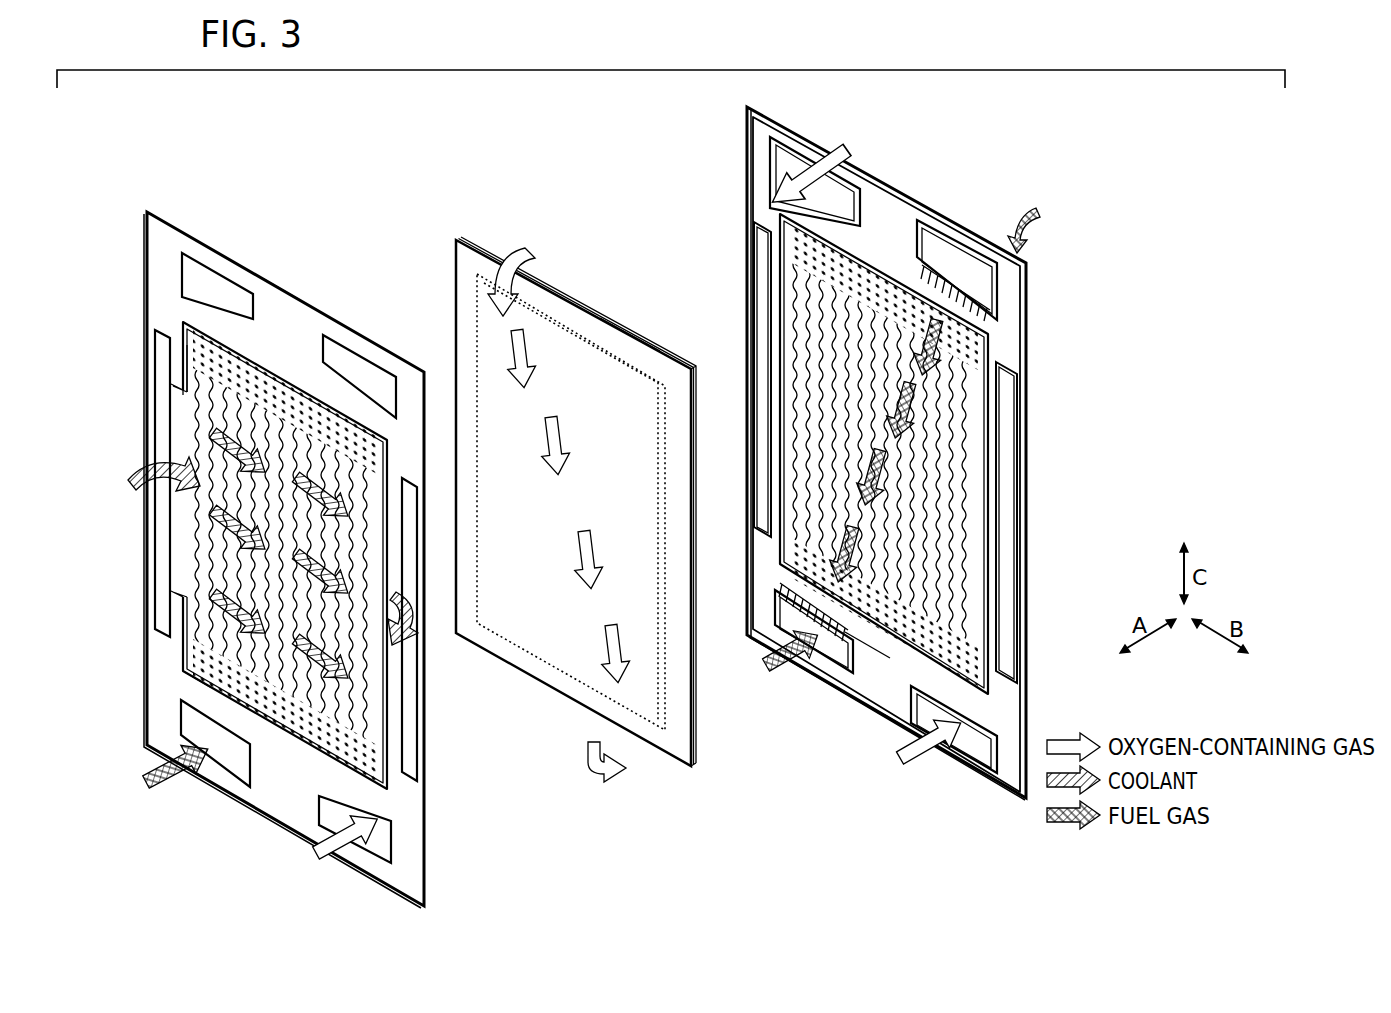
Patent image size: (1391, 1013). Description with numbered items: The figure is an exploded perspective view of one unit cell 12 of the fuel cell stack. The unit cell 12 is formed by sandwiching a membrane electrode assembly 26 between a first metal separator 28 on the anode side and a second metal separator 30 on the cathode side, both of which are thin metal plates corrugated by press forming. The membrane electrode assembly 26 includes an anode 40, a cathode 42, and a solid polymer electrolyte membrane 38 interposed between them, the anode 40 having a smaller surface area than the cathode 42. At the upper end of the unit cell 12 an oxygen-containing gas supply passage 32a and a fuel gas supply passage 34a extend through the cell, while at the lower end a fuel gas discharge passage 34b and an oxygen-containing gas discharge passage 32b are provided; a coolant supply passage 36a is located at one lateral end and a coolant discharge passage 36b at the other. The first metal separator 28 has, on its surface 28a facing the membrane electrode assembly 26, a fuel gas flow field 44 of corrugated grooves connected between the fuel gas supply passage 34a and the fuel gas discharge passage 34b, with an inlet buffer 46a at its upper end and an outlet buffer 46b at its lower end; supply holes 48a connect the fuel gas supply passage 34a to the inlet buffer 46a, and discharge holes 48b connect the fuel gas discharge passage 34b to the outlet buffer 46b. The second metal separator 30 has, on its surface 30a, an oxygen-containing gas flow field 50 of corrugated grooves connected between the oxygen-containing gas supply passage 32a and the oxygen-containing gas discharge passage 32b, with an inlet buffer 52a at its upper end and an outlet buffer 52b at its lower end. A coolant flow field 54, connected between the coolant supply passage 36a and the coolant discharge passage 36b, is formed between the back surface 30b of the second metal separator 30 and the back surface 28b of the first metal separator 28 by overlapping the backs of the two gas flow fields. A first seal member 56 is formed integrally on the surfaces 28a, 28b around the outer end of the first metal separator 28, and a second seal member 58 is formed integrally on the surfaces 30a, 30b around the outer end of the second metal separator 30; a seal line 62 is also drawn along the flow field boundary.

The unit cell 12 is at (338, 218).
The membrane electrode assembly 26 is at (456, 238).
The first metal separator 28 is at (746, 126).
The surface of first metal separator 28a is at (868, 698).
The surface of first metal separator 28b is at (896, 720).
The second metal separator 30 is at (146, 210).
The surface of second metal separator 30a is at (288, 800).
The surface of second metal separator 30b is at (252, 788).
The oxygen-containing gas supply passage 32a is at (207, 290).
The oxygen-containing gas discharge passage 32b is at (384, 827).
The fuel gas supply passage 34a is at (343, 362).
The fuel gas discharge passage 34b is at (190, 729).
The coolant supply passage 36a is at (158, 565).
The coolant discharge passage 36b is at (409, 727).
The solid polymer electrolyte membrane 38 is at (621, 337).
The anode 40 is at (636, 375).
The cathode 42 is at (586, 325).
The fuel gas flow field 44 is at (810, 307).
The inlet buffer 46a is at (803, 265).
The outlet buffer 46b is at (954, 632).
The supply holes 48a is at (976, 300).
The discharge holes 48b is at (795, 612).
The oxygen-containing gas flow field 50 is at (215, 444).
The inlet buffer 52a is at (182, 356).
The outlet buffer 52b is at (184, 683).
The coolant flow field 54 is at (216, 440).
The first seal member 56 is at (957, 767).
The second seal member 58 is at (214, 791).
The seal line 62 is at (869, 641).